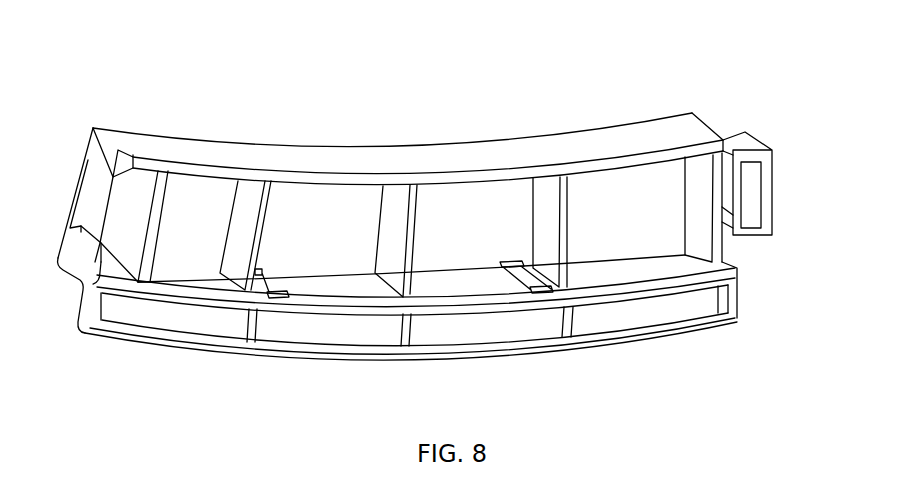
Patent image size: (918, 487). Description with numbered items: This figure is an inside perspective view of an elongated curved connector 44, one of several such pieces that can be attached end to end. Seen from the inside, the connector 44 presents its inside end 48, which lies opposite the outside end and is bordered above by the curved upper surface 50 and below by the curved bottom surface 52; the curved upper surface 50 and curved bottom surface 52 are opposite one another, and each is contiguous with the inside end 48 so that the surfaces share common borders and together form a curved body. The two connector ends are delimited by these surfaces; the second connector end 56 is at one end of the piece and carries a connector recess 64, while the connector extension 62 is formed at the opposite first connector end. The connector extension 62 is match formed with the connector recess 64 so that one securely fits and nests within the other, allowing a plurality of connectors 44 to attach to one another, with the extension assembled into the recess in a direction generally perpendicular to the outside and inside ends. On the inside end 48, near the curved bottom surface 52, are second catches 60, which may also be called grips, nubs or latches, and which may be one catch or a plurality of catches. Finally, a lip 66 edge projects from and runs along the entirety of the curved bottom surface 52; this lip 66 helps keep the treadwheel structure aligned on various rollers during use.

The connector 44 is at (121, 78).
The inside end 48 is at (445, 263).
The curved upper surface 50 is at (438, 152).
The curved bottom surface 52 is at (70, 280).
The second connector end 56 is at (98, 152).
The second catch 60 is at (275, 297).
The connector extension 62 is at (767, 180).
The connector recess 64 is at (90, 205).
The lip 66 is at (662, 322).